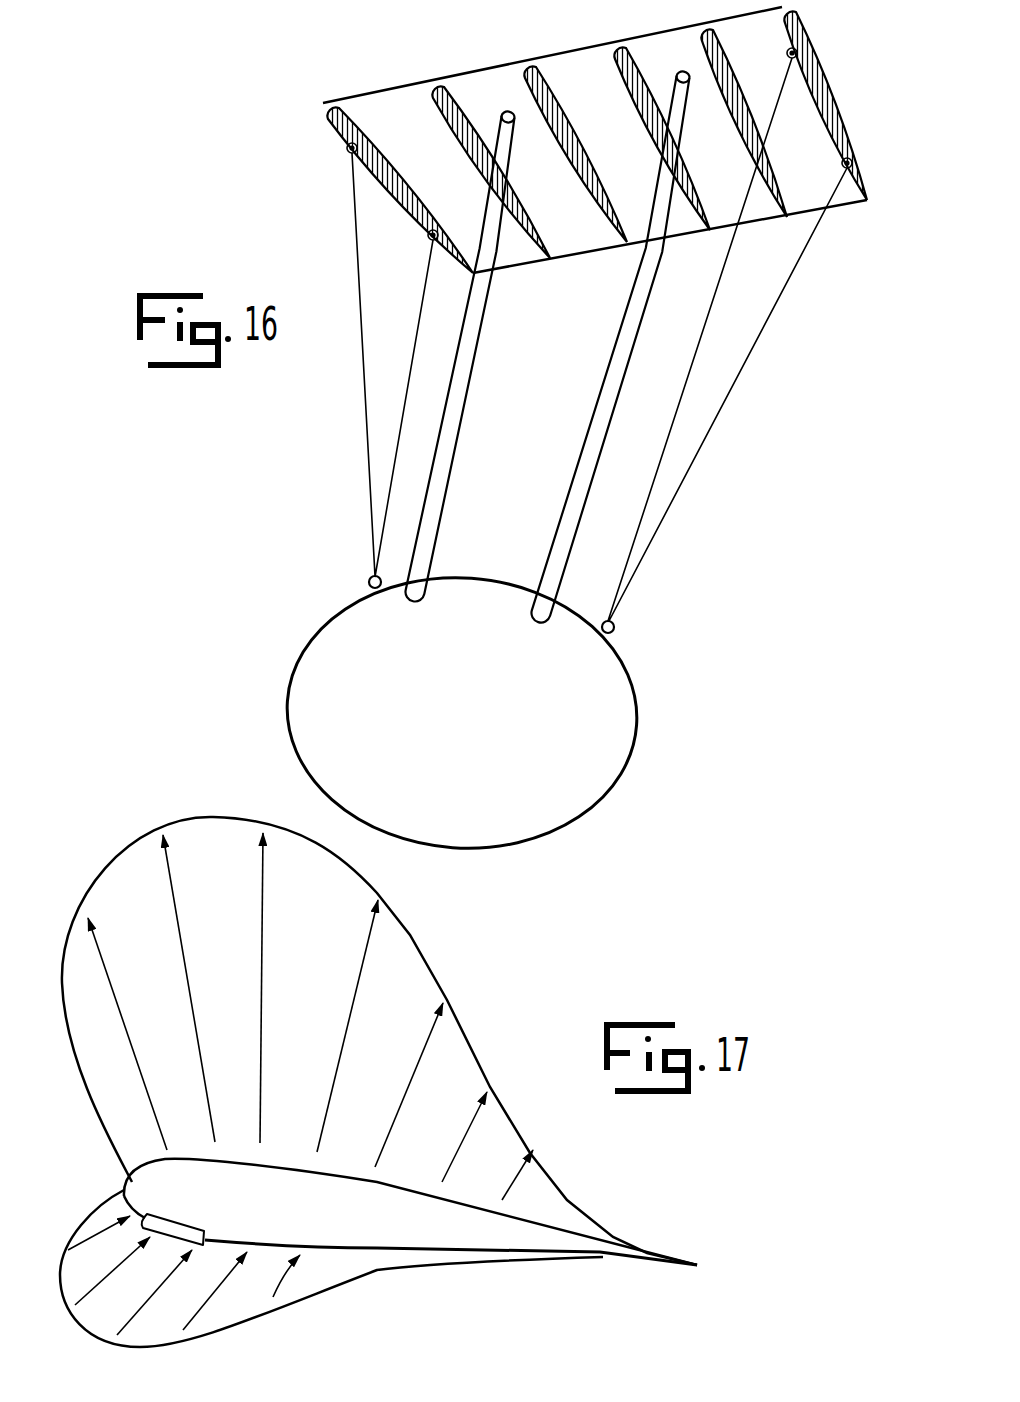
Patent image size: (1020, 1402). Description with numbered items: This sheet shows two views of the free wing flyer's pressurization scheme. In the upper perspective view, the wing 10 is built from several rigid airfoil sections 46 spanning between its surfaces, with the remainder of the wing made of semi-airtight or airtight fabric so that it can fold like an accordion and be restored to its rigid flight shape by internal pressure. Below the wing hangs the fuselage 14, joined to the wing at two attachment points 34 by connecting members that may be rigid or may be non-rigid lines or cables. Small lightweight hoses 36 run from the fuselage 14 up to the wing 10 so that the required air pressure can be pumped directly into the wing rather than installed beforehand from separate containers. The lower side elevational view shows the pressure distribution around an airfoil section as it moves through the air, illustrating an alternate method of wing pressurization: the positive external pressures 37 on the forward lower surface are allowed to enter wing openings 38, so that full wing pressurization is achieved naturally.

In FIG. 16, the wing 10 is at (562, 67).
In FIG. 16, the fuselage 14 is at (333, 747).
In FIG. 16, the attachment points 34 is at (368, 583).
In FIG. 16, the hoses 36 is at (468, 410).
In FIG. 16, the rigid airfoil section 46 is at (392, 167).
In FIG. 17, the positive external pressures 37 is at (237, 1302).
In FIG. 17, the wing openings 38 is at (187, 1230).